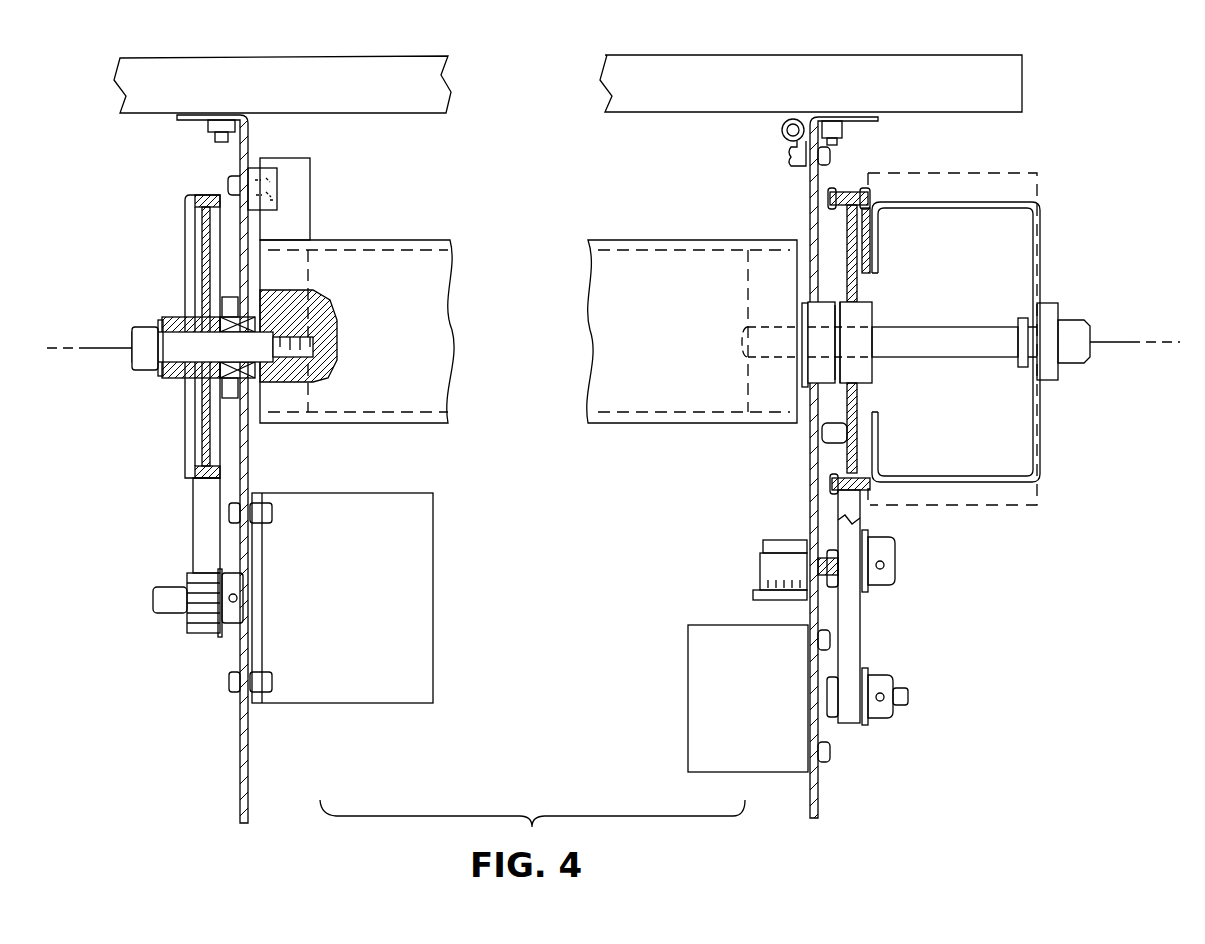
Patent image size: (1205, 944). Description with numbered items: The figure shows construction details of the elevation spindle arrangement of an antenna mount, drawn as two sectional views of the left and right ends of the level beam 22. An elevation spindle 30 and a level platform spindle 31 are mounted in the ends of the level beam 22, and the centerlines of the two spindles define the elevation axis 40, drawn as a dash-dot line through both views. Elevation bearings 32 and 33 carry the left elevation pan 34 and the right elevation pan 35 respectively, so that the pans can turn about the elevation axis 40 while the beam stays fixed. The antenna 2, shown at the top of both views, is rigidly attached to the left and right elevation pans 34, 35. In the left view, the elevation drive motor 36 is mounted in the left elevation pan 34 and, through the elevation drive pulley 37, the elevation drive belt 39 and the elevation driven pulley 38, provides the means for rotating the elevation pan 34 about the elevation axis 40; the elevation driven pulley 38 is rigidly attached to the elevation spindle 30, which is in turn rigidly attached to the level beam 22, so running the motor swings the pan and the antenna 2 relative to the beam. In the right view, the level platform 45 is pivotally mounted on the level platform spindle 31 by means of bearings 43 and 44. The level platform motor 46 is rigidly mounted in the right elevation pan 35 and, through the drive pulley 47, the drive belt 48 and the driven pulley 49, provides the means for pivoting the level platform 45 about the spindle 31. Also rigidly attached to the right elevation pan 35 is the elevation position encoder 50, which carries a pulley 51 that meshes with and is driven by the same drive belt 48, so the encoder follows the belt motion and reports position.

The antenna 2 is at (448, 80).
The level beam 22 is at (413, 240).
The elevation spindle 30 is at (178, 348).
The level platform spindle 31 is at (957, 337).
The elevation bearing 32 is at (228, 378).
The elevation bearing 33 is at (815, 368).
The left elevation pan 34 is at (248, 742).
The right elevation pan 35 is at (810, 797).
The elevation drive motor 36 is at (425, 627).
The elevation drive pulley 37 is at (195, 585).
The elevation driven pulley 38 is at (200, 280).
The elevation drive belt 39 is at (200, 538).
The elevation axis 40 is at (93, 348).
The bearing 43 is at (863, 312).
The bearing 44 is at (1050, 303).
The level platform 45 is at (977, 487).
The level platform motor 46 is at (697, 672).
The drive pulley 47 is at (877, 717).
The drive belt 48 is at (858, 630).
The driven pulley 49 is at (866, 210).
The elevation position encoder 50 is at (760, 567).
The pulley 51 is at (890, 578).